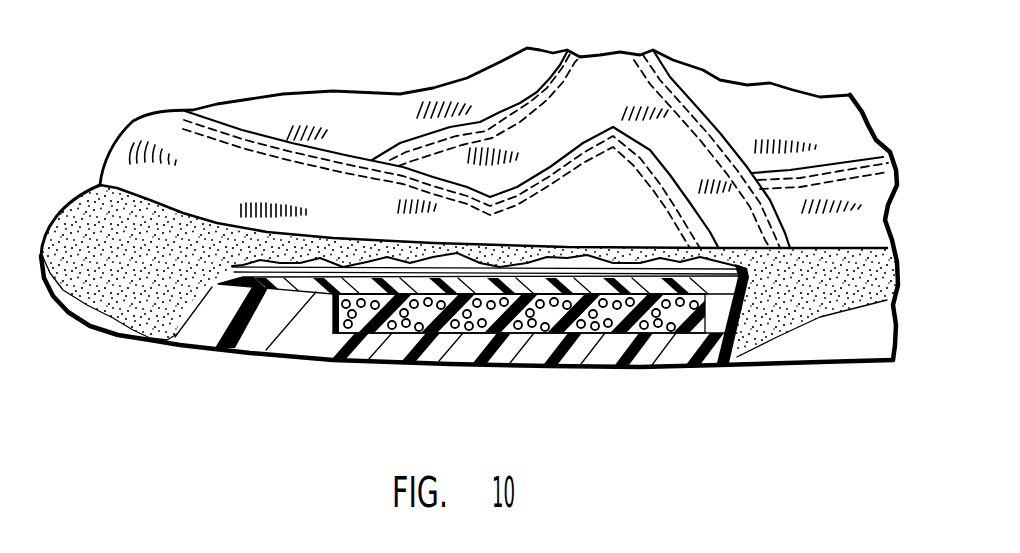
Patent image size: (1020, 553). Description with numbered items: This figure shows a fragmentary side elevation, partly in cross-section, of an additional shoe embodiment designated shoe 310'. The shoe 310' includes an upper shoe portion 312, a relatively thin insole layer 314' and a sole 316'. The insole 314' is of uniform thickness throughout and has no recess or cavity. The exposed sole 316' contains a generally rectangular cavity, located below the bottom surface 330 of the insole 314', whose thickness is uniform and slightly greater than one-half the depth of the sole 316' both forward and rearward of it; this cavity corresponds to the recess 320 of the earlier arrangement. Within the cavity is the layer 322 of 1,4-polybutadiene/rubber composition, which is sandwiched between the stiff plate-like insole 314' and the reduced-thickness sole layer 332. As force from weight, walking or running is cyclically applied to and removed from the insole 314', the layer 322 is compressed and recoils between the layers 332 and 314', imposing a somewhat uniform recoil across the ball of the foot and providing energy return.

The shoe 310' is at (469, 185).
The upper shoe portion 312 is at (246, 105).
The insole layer 314' is at (481, 244).
The sole 316' is at (245, 354).
The lower recess 320 is at (462, 330).
The layer 322 is at (563, 307).
The bottom surface 330 is at (434, 292).
The layer 332 is at (640, 347).